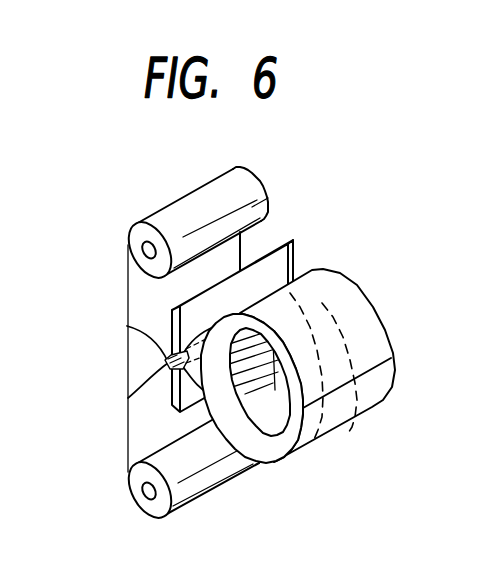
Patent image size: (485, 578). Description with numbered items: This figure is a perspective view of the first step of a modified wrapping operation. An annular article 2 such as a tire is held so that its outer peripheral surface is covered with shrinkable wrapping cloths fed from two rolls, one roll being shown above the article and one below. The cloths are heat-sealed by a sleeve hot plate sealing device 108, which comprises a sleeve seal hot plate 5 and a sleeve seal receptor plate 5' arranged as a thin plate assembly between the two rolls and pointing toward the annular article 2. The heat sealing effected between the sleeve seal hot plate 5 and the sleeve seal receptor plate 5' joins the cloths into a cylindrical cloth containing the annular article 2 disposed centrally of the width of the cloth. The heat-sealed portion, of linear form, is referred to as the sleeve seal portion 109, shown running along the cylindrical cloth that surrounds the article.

The annular article 2 is at (284, 459).
The sleeve seal hot plate 5 is at (154, 338).
The sleeve seal receptor plate 5' is at (153, 388).
The sleeve hot plate sealing device 108 is at (88, 313).
The sleeve seal portion 109 is at (384, 356).